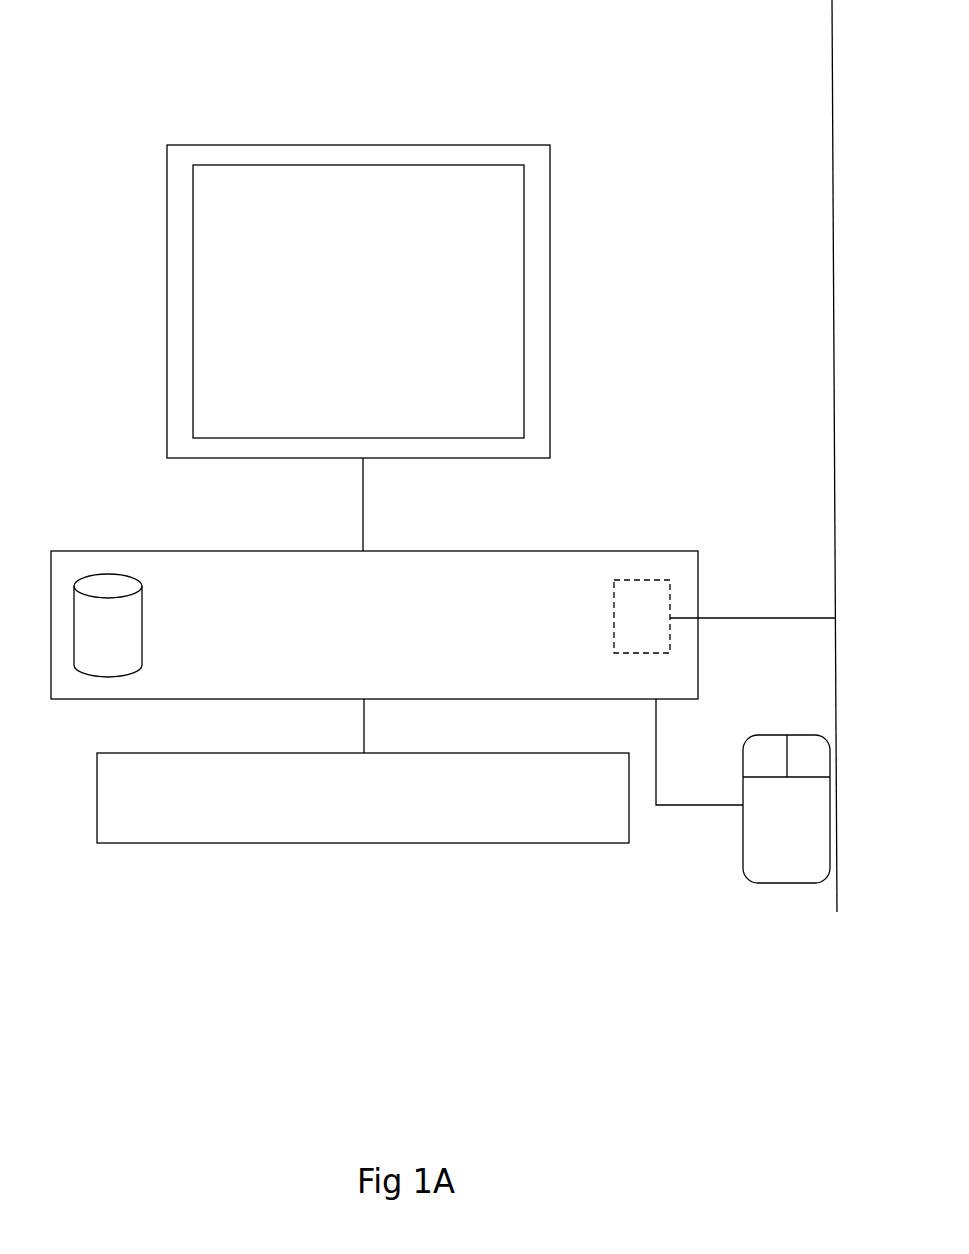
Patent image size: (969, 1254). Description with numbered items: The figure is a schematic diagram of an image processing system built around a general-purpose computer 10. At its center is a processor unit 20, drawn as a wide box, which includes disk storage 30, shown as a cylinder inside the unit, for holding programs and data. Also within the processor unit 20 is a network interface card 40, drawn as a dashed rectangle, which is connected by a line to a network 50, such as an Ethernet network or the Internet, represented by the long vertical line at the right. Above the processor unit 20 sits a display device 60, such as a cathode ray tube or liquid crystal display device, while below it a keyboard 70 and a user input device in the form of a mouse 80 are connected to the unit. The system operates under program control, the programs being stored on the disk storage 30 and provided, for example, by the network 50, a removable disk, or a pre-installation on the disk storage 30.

The general-purpose computer 10 is at (55, 395).
The processor unit 20 is at (660, 550).
The disk storage 30 is at (100, 585).
The network interface card 40 is at (672, 608).
The network 50 is at (835, 292).
The display device 60 is at (551, 288).
The keyboard 70 is at (493, 843).
The mouse 80 is at (780, 883).